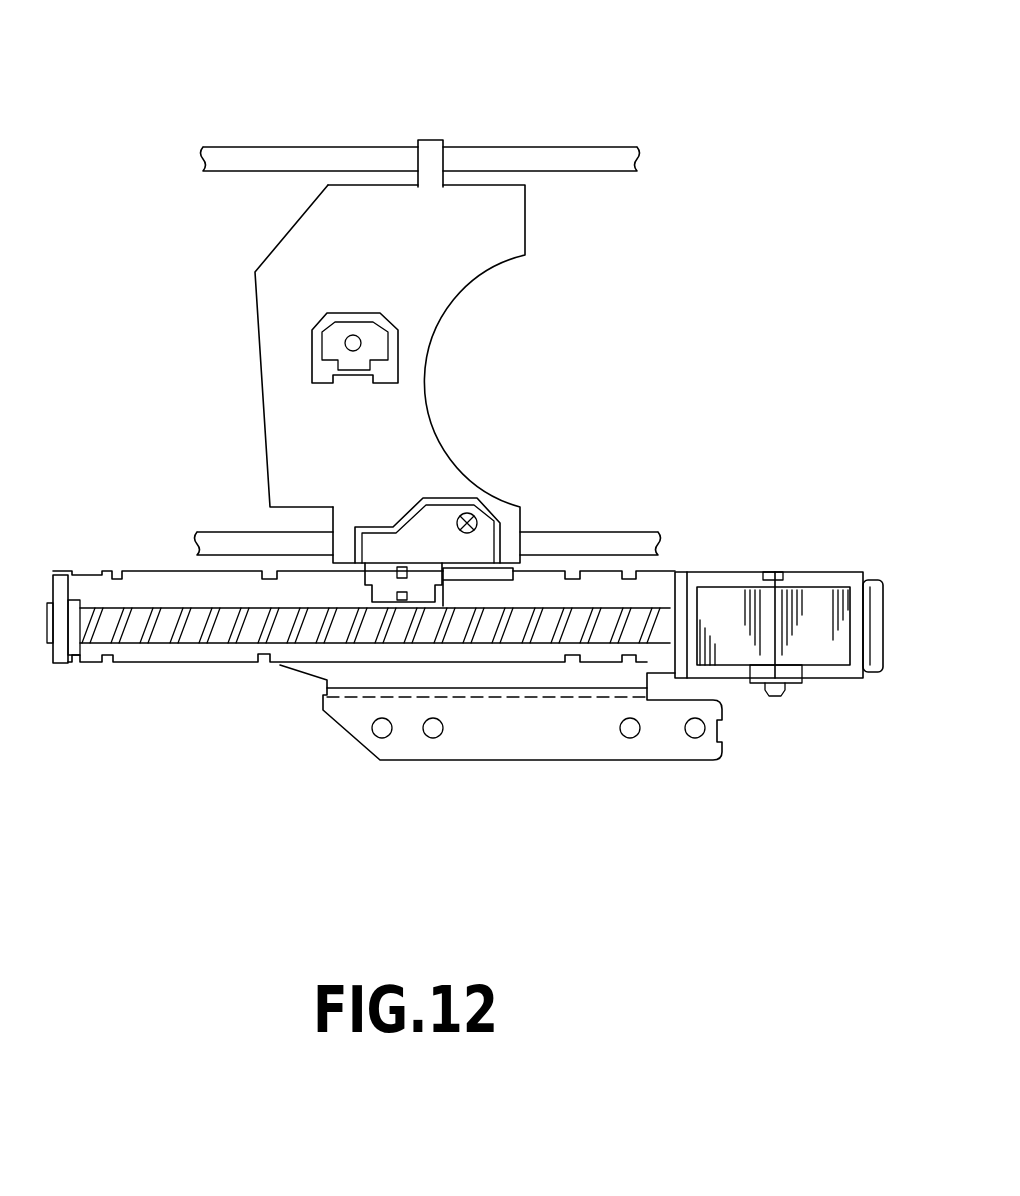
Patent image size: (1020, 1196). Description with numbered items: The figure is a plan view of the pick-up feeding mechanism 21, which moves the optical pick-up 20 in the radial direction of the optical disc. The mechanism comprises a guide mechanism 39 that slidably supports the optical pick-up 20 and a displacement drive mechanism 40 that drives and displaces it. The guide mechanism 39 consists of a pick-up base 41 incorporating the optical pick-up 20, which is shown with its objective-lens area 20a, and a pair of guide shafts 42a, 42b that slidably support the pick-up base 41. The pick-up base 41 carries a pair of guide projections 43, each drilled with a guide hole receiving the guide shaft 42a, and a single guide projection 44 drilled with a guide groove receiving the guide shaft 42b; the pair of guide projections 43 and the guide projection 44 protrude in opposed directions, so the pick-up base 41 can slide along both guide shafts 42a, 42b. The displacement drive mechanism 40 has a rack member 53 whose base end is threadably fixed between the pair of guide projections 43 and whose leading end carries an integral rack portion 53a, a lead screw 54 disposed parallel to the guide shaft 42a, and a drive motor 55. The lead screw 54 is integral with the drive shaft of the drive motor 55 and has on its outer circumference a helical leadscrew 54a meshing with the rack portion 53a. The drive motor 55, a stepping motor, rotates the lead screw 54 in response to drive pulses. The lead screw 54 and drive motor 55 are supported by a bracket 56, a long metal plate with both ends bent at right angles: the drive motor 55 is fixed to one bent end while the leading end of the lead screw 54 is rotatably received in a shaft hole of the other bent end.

The optical pick-up 20 is at (483, 360).
The objective lens 20a is at (355, 333).
The pick-up feeding mechanism 21 is at (212, 83).
The guide mechanism 39 is at (733, 196).
The displacement drive mechanism 40 is at (780, 775).
The pick-up base 41 is at (250, 388).
The guide shaft 42a is at (610, 532).
The guide shaft 42b is at (560, 150).
The guide projections 43 is at (512, 568).
The guide projection 44 is at (433, 138).
The rack member 53 is at (407, 543).
The rack portion 53a is at (398, 604).
The lead screw 54 is at (621, 606).
The helical leadscrew 54a is at (462, 607).
The drive motor 55 is at (813, 572).
The bracket 56 is at (183, 662).